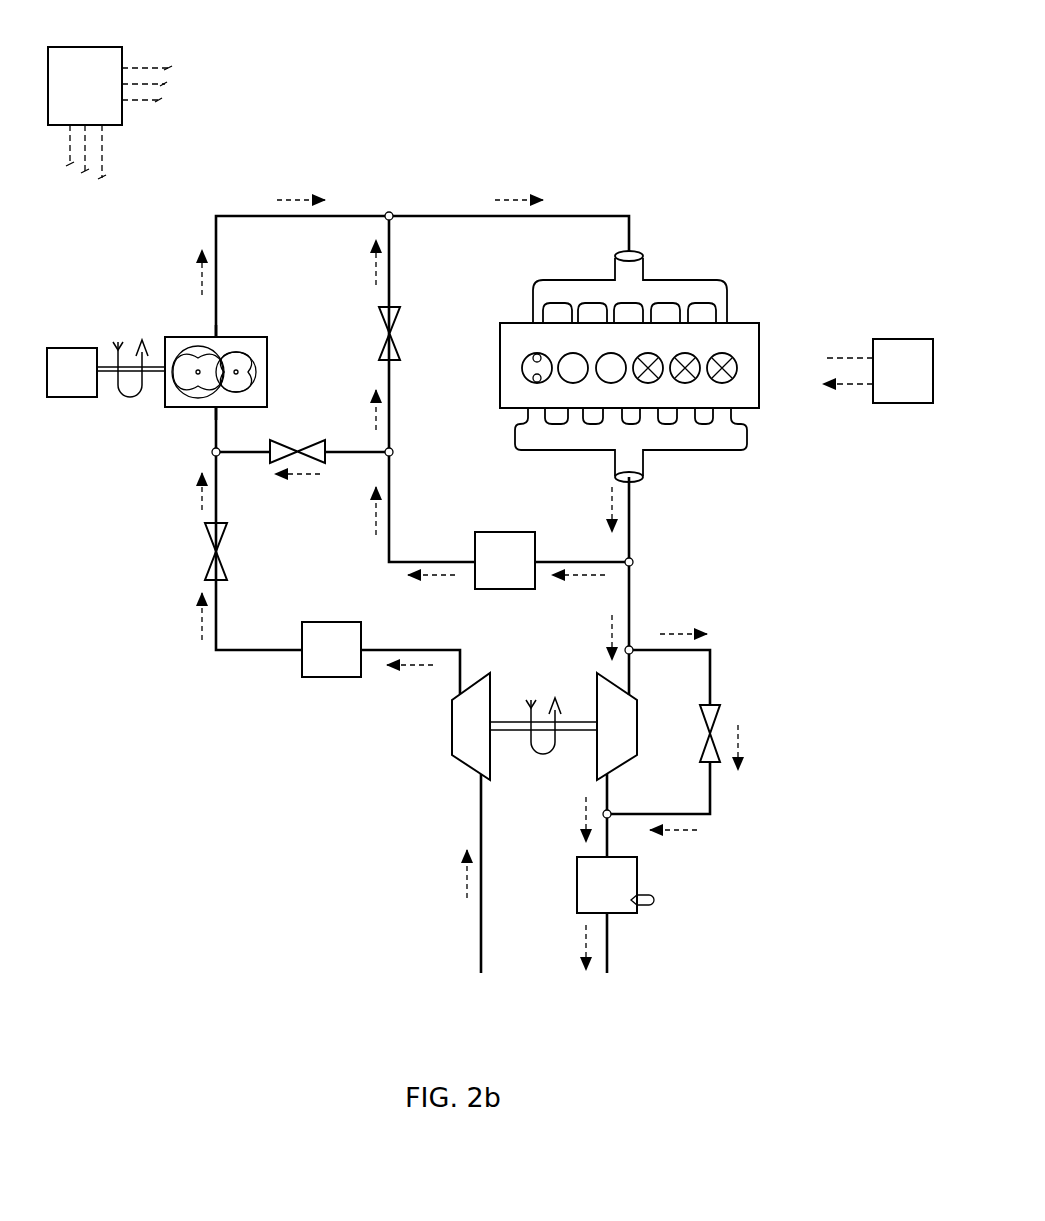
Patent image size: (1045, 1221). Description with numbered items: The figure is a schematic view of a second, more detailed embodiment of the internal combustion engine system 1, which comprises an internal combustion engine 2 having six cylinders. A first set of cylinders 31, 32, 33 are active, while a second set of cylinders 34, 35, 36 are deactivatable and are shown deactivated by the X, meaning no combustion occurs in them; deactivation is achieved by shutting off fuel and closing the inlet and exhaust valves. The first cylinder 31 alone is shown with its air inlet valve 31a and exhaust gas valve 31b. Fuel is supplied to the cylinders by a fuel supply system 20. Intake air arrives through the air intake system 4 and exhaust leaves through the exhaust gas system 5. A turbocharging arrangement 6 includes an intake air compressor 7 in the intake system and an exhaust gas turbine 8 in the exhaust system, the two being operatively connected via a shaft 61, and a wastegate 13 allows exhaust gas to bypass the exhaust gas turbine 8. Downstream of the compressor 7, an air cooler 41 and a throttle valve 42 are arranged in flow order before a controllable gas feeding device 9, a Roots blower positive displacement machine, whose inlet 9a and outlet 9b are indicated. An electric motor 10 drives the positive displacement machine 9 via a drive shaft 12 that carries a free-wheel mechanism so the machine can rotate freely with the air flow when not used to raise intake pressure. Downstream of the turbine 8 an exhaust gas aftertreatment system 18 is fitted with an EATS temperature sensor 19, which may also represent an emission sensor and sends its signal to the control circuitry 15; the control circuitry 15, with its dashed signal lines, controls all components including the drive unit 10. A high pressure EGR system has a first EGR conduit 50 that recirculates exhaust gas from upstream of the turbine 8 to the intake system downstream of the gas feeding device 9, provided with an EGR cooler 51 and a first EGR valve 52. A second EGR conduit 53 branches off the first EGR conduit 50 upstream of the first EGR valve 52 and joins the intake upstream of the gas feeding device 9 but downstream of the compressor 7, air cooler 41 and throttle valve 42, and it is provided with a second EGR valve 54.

The internal combustion engine system 1 is at (338, 812).
The internal combustion engine 2 is at (643, 304).
The air intake system 4 is at (351, 216).
The exhaust gas system 5 is at (629, 607).
The turbocharging arrangement 6 is at (565, 744).
The intake air compressor 7 is at (452, 725).
The exhaust gas turbine 8 is at (637, 727).
The controllable gas feeding device 9 is at (165, 395).
The inlet 9a is at (215, 410).
The outlet 9b is at (214, 337).
The electric motor 10 is at (65, 348).
The drive shaft 12 is at (130, 340).
The wastegate 13 is at (722, 722).
The control circuitry 15 is at (85, 47).
The exhaust gas aftertreatment system 18 is at (637, 878).
The EATS temperature sensor 19 is at (652, 900).
The fuel supply system 20 is at (901, 339).
The first cylinder 31 is at (491, 372).
The air inlet valve 31a is at (532, 358).
The exhaust gas valve 31b is at (530, 370).
The cylinder 32 is at (576, 345).
The cylinder 33 is at (612, 345).
The second cylinder 34 is at (650, 345).
The cylinder 35 is at (687, 345).
The cylinder 36 is at (725, 345).
The air cooler 41 is at (330, 677).
The throttle valve 42 is at (212, 557).
The first EGR conduit 50 is at (389, 382).
The EGR cooler 51 is at (505, 532).
The first EGR valve 52 is at (385, 340).
The second EGR conduit 53 is at (350, 455).
The second EGR valve 54 is at (310, 445).
The shaft 61 is at (545, 720).